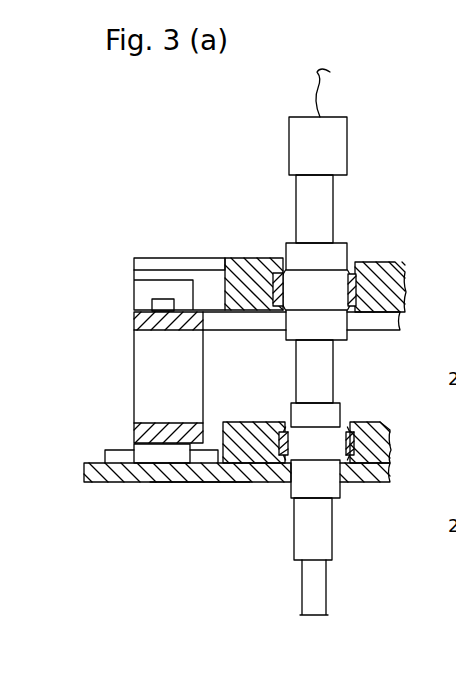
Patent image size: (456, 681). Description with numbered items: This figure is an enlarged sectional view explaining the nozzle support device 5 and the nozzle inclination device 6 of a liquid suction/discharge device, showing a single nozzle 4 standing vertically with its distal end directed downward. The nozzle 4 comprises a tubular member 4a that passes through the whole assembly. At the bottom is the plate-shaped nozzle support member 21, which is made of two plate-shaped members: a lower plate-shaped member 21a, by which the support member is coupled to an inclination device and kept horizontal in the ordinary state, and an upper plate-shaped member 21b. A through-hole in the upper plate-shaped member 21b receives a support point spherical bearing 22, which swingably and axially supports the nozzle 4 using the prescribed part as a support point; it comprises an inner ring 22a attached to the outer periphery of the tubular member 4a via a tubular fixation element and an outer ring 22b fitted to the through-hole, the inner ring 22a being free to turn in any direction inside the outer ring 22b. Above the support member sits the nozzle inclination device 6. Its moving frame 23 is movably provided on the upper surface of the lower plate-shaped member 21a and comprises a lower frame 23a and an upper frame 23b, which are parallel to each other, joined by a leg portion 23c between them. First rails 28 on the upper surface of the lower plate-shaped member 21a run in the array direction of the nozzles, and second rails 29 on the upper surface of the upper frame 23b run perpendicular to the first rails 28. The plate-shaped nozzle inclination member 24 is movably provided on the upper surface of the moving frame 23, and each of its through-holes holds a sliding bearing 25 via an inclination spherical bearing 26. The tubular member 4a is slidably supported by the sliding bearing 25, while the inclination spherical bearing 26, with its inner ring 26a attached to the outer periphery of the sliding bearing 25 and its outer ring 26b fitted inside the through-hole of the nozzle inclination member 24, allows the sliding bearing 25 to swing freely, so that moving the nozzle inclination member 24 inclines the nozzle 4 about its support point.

The nozzle 4 is at (327, 587).
The tubular member 4a is at (322, 533).
The nozzle support device 5 is at (210, 480).
The nozzle inclination device 6 is at (174, 258).
The nozzle support member 21 is at (210, 473).
The lower plate-shaped member 21a is at (144, 485).
The upper plate-shaped member 21b is at (373, 424).
The support point spherical bearing 22 is at (309, 486).
The inner ring 22a is at (308, 448).
The outer ring 22b is at (268, 445).
The moving frame 23 is at (156, 342).
The lower frame 23a is at (133, 368).
The upper frame 23b is at (133, 315).
The leg portion 23c is at (148, 347).
The nozzle inclination member 24 is at (387, 262).
The sliding bearing 25 is at (307, 257).
The inclination spherical bearing 26 is at (364, 273).
The inner ring 26a is at (318, 297).
The outer ring 26b is at (365, 297).
The first rails 28 is at (108, 450).
The second rails 29 is at (161, 300).